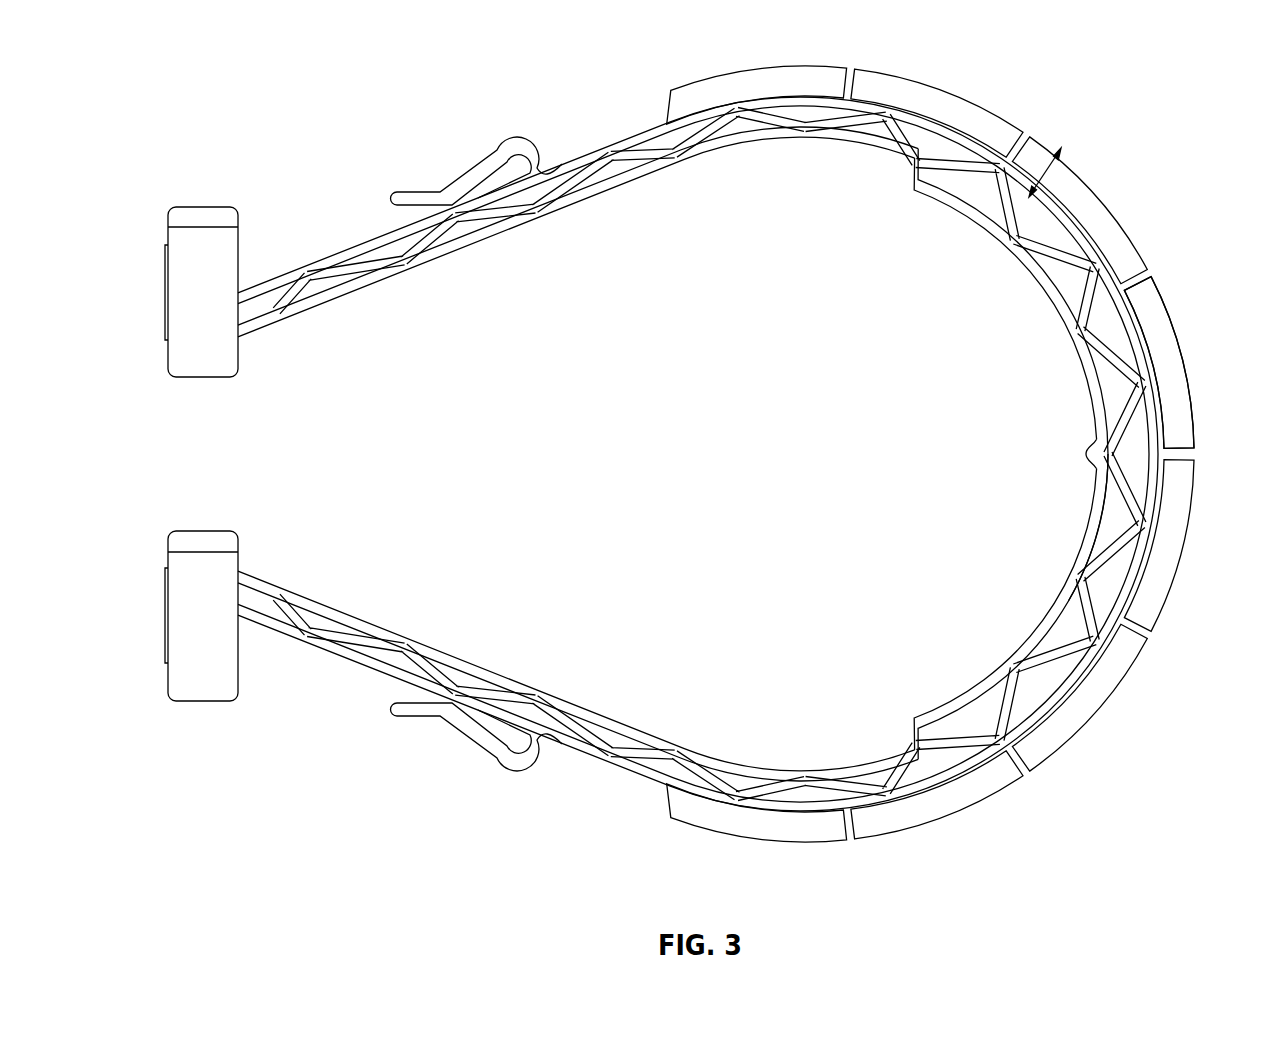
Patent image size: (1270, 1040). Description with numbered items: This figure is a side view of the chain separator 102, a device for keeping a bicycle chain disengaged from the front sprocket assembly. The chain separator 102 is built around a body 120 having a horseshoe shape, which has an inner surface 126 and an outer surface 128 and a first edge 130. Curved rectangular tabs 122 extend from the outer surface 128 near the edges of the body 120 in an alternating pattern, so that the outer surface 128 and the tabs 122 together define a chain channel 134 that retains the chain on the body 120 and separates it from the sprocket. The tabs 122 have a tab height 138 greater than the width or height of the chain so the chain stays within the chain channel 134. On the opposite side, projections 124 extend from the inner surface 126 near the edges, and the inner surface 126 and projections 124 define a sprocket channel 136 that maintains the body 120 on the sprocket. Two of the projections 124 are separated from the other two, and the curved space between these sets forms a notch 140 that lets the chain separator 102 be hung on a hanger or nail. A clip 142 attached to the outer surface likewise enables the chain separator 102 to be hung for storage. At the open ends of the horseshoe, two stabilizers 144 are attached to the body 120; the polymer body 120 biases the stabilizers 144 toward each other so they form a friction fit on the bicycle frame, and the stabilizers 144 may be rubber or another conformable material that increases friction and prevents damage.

The chain separator 102 is at (233, 145).
The body 120 is at (580, 160).
The tab 122 is at (873, 822).
The projection 124 is at (1050, 298).
The inner surface 126 is at (838, 138).
The outer surface 128 is at (960, 780).
The first edge 130 is at (1168, 490).
The chain channel 134 is at (1178, 313).
The sprocket channel 136 is at (1003, 488).
The tab height 138 is at (1064, 152).
The notch 140 is at (1093, 456).
The clip 142 is at (462, 185).
The stabilizer 144 is at (193, 255).